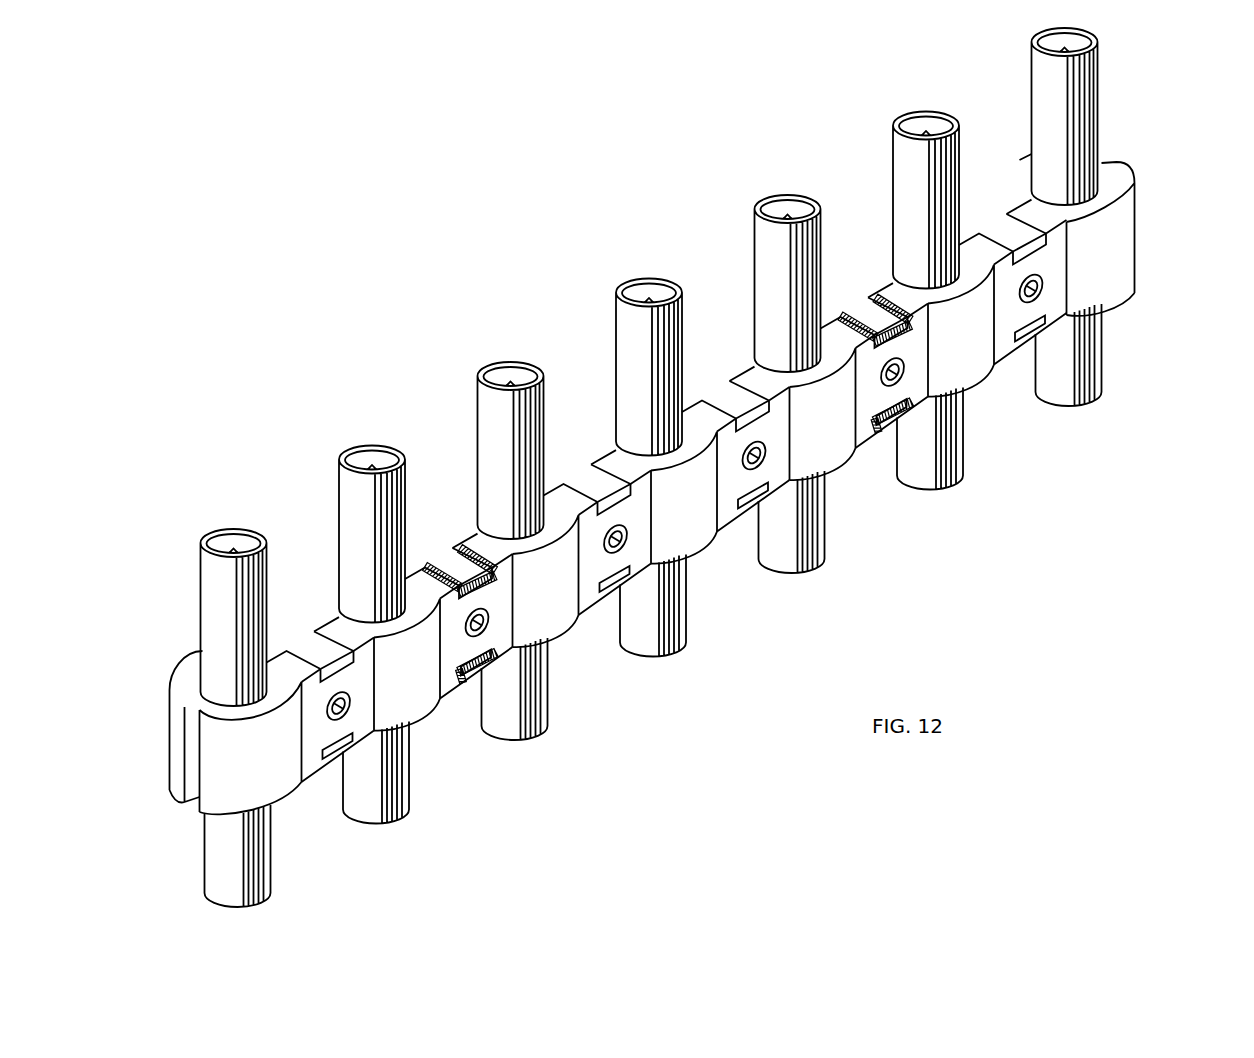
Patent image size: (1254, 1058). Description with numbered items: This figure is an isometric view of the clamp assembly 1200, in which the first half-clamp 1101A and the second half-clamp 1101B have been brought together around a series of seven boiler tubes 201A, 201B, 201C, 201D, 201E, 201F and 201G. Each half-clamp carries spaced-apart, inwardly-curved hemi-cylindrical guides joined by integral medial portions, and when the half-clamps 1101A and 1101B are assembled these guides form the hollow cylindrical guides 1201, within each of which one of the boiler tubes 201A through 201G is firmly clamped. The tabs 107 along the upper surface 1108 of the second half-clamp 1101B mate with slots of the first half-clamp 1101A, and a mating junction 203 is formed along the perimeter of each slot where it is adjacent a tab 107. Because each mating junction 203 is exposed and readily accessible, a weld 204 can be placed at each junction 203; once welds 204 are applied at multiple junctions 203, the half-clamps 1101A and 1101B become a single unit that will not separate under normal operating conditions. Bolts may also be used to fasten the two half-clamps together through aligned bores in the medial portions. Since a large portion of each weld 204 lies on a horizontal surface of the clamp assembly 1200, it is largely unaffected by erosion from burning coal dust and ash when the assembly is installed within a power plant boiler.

The clamp assembly 1200 is at (1136, 152).
The boiler tube 201A is at (221, 588).
The boiler tube 201B is at (360, 505).
The boiler tube 201C is at (498, 421).
The boiler tube 201D is at (637, 337).
The boiler tube 201E is at (775, 254).
The boiler tube 201F is at (914, 170).
The boiler tube 201G is at (1052, 87).
The first half-clamp 1101A is at (277, 787).
The second half-clamp 1101B is at (187, 685).
The cylindrical guide 1201 is at (611, 444).
The tab 107 is at (325, 668).
The mating junction 203 is at (300, 668).
The weld 204 is at (447, 566).
The upper surface of second half-clamp 1108 is at (328, 723).